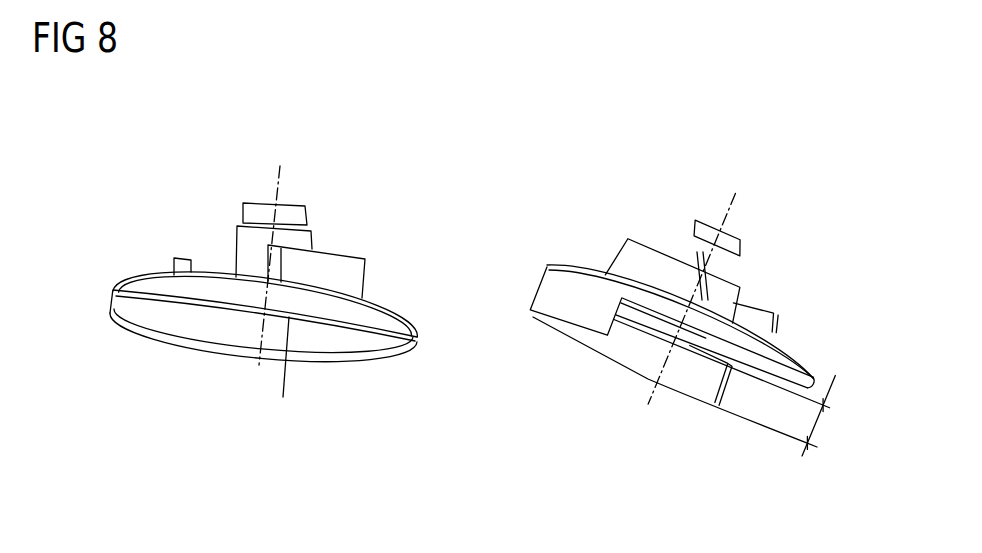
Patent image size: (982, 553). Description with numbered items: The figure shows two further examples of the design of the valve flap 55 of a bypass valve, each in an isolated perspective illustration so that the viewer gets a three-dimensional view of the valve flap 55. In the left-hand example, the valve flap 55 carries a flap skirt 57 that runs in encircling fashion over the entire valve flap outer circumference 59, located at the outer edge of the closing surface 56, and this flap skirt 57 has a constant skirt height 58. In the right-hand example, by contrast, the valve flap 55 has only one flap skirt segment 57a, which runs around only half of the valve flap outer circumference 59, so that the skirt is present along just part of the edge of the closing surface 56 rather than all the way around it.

The valve flap 55 is at (233, 274).
The closing surface 56 is at (234, 328).
The flap skirt 57 is at (377, 312).
The flap skirt segment 57a is at (627, 348).
The skirt height 58 is at (288, 355).
The valve flap outer circumference 59 is at (118, 294).